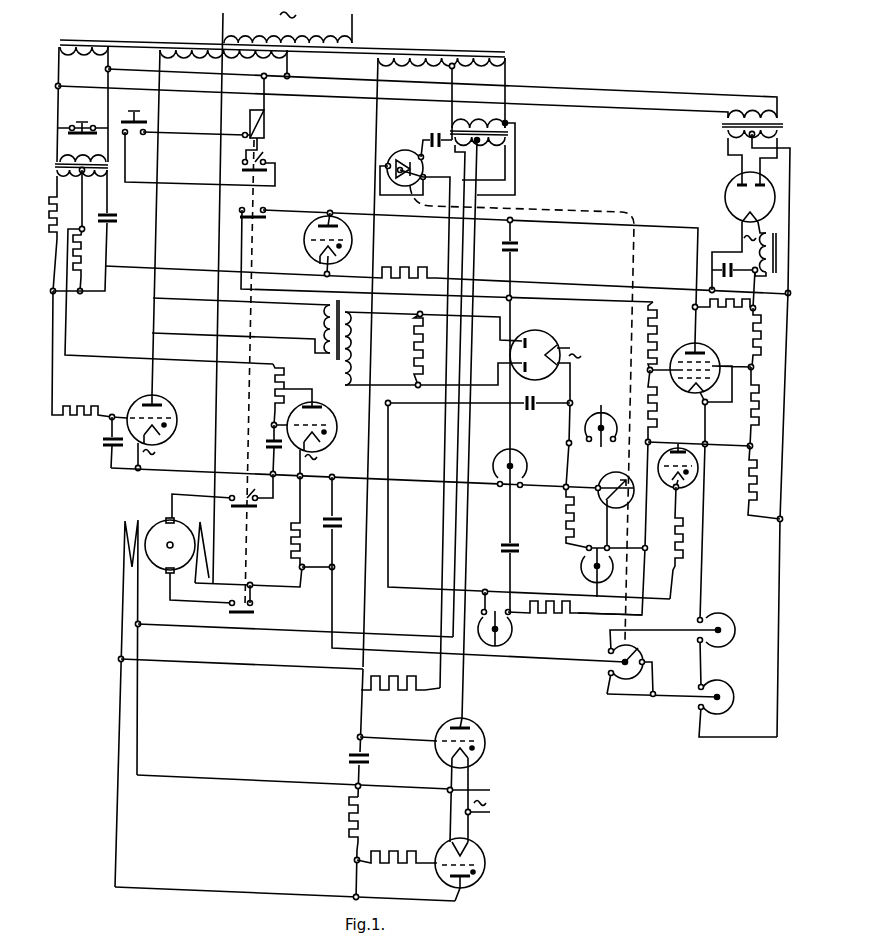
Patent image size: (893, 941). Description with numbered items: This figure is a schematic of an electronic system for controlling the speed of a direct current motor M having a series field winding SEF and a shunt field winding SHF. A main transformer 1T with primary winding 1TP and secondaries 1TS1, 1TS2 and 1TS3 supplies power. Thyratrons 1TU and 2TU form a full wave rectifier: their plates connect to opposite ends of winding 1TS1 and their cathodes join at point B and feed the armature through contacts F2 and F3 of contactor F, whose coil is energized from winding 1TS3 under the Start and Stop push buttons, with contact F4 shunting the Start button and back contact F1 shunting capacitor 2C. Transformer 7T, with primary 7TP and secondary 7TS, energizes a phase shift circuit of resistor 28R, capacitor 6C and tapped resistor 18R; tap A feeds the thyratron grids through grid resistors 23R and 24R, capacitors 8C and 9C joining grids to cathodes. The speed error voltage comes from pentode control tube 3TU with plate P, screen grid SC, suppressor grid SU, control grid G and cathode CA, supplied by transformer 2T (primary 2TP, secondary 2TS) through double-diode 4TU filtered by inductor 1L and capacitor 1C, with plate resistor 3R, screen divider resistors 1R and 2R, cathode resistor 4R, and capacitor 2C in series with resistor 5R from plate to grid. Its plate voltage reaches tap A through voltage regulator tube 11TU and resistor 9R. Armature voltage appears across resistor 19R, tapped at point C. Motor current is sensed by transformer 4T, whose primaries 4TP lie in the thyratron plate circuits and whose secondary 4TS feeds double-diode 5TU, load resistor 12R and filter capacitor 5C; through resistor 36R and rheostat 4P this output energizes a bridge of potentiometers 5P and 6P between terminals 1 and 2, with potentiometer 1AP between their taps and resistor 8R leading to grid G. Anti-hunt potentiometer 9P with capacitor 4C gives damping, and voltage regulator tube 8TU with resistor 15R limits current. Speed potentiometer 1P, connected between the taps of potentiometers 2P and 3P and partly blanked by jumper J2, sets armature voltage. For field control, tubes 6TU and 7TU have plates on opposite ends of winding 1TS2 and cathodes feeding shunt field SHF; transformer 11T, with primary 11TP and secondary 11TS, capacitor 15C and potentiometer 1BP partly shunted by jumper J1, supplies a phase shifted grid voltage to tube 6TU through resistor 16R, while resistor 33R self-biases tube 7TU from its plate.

The main transformer 1T is at (211, 36).
The primary winding 1TP is at (307, 27).
The secondary winding 1TS1 is at (221, 298).
The secondary winding 1TS2 is at (421, 362).
The secondary winding 1TS3 is at (103, 104).
The transformer 7T is at (52, 172).
The primary winding 7TP is at (83, 149).
The secondary winding 7TS is at (101, 177).
The Stop push button Stop is at (83, 118).
The Start push button Start is at (194, 140).
The contactor F is at (278, 131).
The back contact F1 is at (463, 265).
The normally open contact F2 is at (222, 496).
The normally open contact F3 is at (252, 600).
The holding contact F4 is at (262, 156).
The resistor 28R is at (37, 233).
The resistor 18R is at (96, 277).
The tap A is at (83, 263).
The capacitor 6C is at (119, 223).
The grid resistor 23R is at (83, 355).
The capacitor 8C is at (101, 442).
The gas-filled triode 1TU is at (140, 407).
The voltage regulator tube 11TU is at (333, 226).
The resistor 9R is at (425, 270).
The capacitor 2C is at (524, 414).
The current detecting transformer 4T is at (348, 406).
The primary windings 4TP is at (241, 325).
The secondary winding 4TS is at (347, 328).
The load resistor 12R is at (403, 349).
The grid resistor 24R is at (295, 394).
The gas-filled triode 2TU is at (323, 452).
The capacitor 9C is at (266, 449).
The common cathode point B is at (306, 468).
The tap point C is at (316, 559).
The armature terminal resistor 19R is at (292, 540).
The direct current motor M is at (164, 503).
The shunt field winding SHF is at (124, 532).
The series field winding SEF is at (201, 530).
The resistor 16R is at (400, 672).
The biasing resistor 33R is at (397, 850).
The field voltage rectifier tube 6TU is at (479, 738).
The field voltage rectifier tube 7TU is at (480, 857).
The potentiometer 1BP is at (507, 386).
The jumper J1 is at (424, 428).
The capacitor 15C is at (425, 130).
The transformer 11T is at (546, 131).
The primary winding 11TP is at (483, 149).
The secondary winding 11TS is at (479, 427).
The transformer 2T is at (804, 131).
The primary winding 2TP is at (752, 107).
The secondary winding 2TS is at (733, 132).
The double-diode rectifier 4TU is at (727, 186).
The inductor 1L is at (767, 263).
The capacitor 1C is at (735, 275).
The plate resistor 3R is at (749, 303).
The resistor 1R is at (765, 339).
The resistor 2R is at (747, 414).
The resistor 4R is at (746, 476).
The control tube 3TU is at (700, 474).
The plate P is at (687, 333).
The screen grid SC is at (667, 341).
The suppressor grid SU is at (733, 352).
The control grid G is at (664, 384).
The cathode CA is at (667, 401).
The resistor 5R is at (645, 333).
The resistor 8R is at (645, 397).
The voltage regulator tube 8TU is at (678, 456).
The resistor 15R is at (684, 527).
The double-diode rectifier 5TU is at (540, 336).
The capacitor 5C is at (538, 399).
The input terminal 1 is at (566, 457).
The input terminal 2 is at (656, 551).
The potentiometer 5P is at (597, 420).
The potentiometer 1AP is at (615, 501).
The potentiometer 6P is at (583, 568).
The anti-hunt potentiometer 9P is at (521, 458).
The capacitor 4C is at (498, 540).
The current limit rheostat 4P is at (506, 621).
The resistor 36R is at (567, 618).
The speed potentiometer 1P is at (662, 662).
The jumper J2 is at (654, 686).
The potentiometer 2P is at (726, 617).
The potentiometer 3P is at (738, 708).